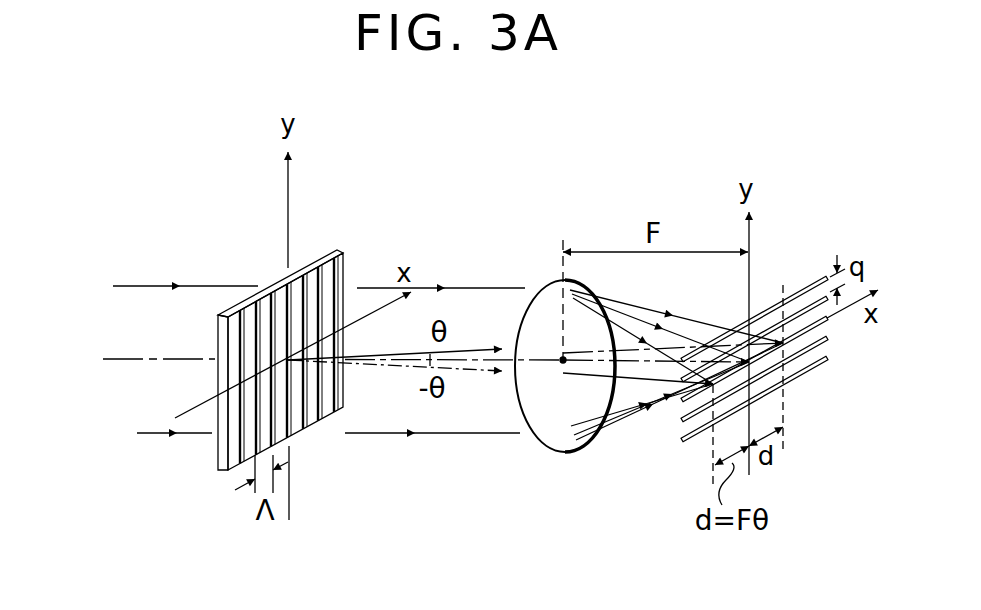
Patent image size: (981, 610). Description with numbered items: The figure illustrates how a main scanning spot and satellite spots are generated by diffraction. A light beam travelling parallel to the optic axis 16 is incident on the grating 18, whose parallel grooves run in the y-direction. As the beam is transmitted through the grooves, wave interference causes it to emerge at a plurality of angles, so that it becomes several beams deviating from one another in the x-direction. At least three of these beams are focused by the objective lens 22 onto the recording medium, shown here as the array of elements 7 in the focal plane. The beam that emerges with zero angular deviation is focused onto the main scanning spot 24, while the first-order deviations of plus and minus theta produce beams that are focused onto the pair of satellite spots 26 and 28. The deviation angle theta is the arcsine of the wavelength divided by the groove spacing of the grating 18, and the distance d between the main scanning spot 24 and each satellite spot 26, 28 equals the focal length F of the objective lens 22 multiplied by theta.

The optic axis 16 is at (175, 357).
The grating 18 is at (215, 453).
The objective lens 22 is at (558, 450).
The detector element 7 is at (802, 283).
The satellite spot 26 is at (812, 365).
The main scanning spot 24 is at (783, 393).
The satellite spot 28 is at (682, 443).